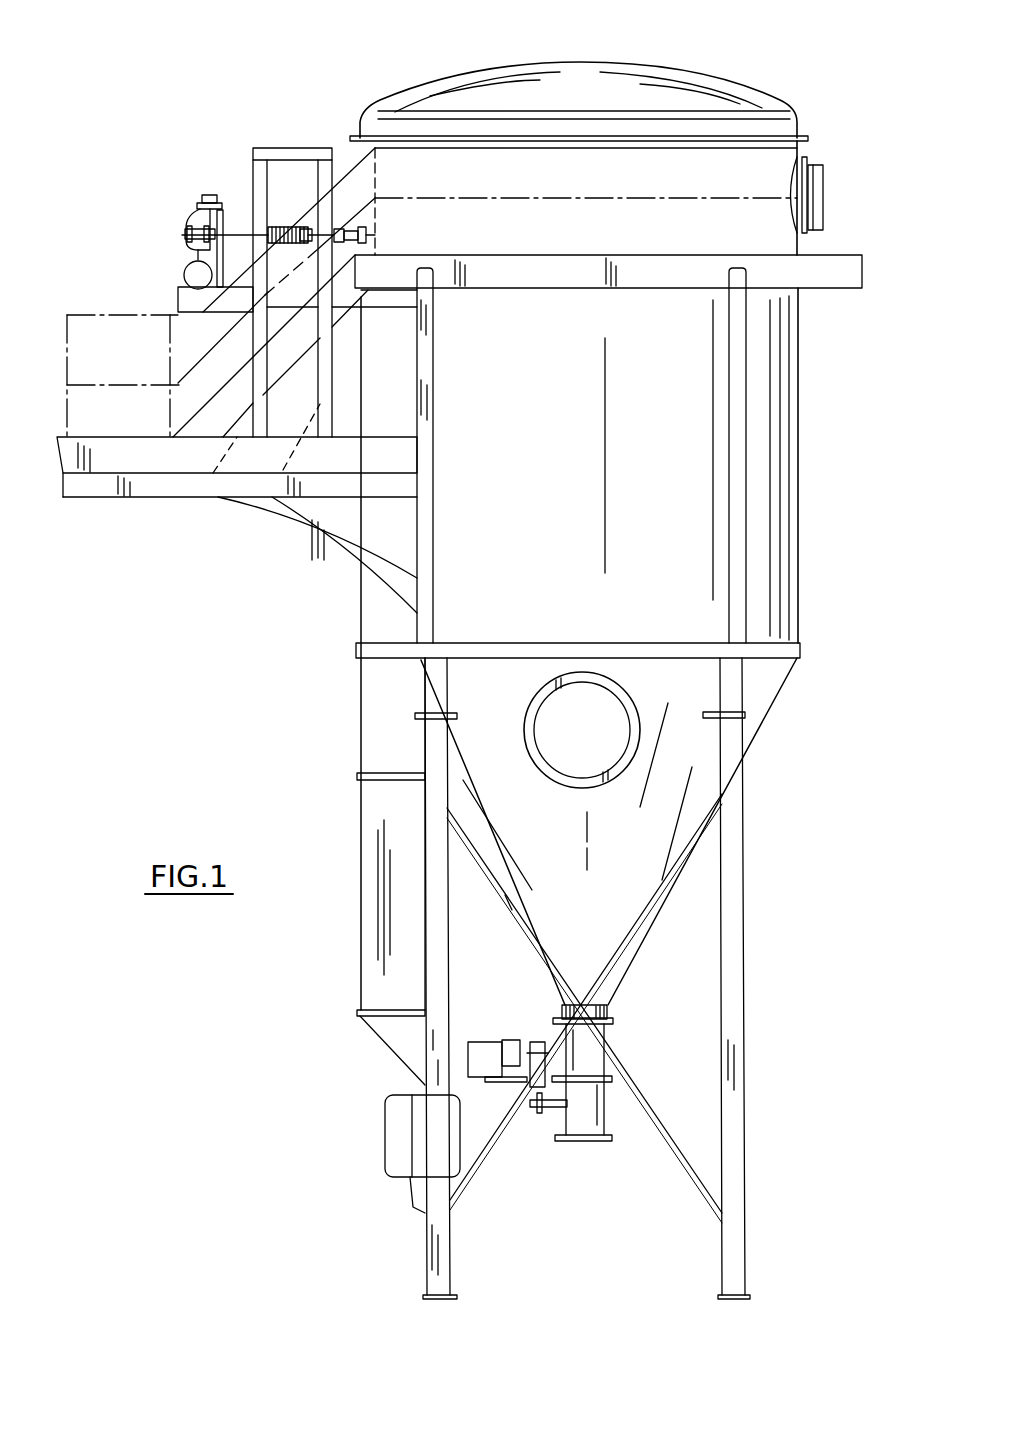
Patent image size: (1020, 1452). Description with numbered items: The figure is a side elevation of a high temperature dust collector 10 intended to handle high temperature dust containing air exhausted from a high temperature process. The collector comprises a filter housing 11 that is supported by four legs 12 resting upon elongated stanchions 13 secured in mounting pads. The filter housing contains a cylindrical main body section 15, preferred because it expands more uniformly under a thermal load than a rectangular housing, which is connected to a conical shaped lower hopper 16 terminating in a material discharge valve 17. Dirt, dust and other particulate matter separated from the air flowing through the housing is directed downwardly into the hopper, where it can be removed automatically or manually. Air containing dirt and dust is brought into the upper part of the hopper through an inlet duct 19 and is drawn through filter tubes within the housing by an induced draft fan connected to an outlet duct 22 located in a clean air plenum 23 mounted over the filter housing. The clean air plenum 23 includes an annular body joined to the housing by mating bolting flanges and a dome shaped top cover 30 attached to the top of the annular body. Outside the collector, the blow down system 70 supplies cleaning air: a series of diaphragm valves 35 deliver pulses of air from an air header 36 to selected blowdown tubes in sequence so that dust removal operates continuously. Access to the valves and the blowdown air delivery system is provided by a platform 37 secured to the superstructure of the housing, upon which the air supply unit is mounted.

The dust collector 10 is at (834, 863).
The filter housing 11 is at (806, 597).
The legs 12 is at (737, 695).
The stanchions 13 is at (746, 1100).
The main body section 15 is at (561, 546).
The lower hopper 16 is at (606, 930).
The material discharge valve 17 is at (576, 1143).
The inlet duct 19 is at (600, 673).
The outlet duct 22 is at (823, 196).
The clean air plenum 23 is at (763, 176).
The dome shaped top cover 30 is at (579, 78).
The diaphragm valves 35 is at (192, 222).
The air header 36 is at (184, 268).
The platform 37 is at (158, 497).
The blow down system 70 is at (233, 136).